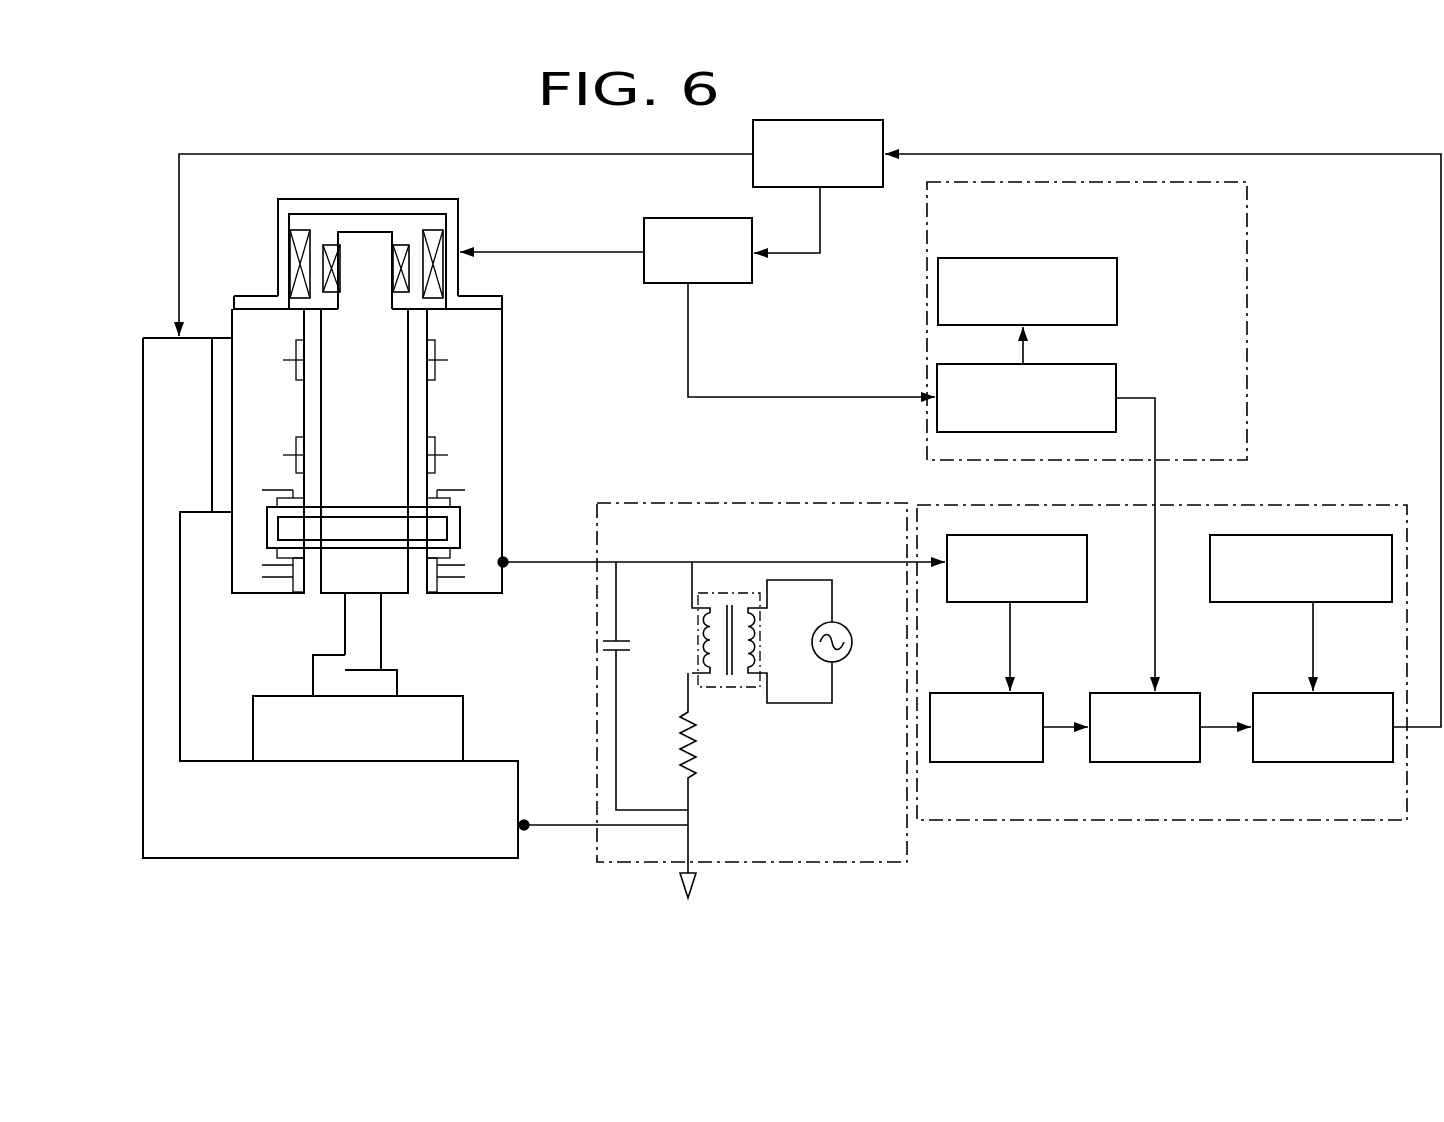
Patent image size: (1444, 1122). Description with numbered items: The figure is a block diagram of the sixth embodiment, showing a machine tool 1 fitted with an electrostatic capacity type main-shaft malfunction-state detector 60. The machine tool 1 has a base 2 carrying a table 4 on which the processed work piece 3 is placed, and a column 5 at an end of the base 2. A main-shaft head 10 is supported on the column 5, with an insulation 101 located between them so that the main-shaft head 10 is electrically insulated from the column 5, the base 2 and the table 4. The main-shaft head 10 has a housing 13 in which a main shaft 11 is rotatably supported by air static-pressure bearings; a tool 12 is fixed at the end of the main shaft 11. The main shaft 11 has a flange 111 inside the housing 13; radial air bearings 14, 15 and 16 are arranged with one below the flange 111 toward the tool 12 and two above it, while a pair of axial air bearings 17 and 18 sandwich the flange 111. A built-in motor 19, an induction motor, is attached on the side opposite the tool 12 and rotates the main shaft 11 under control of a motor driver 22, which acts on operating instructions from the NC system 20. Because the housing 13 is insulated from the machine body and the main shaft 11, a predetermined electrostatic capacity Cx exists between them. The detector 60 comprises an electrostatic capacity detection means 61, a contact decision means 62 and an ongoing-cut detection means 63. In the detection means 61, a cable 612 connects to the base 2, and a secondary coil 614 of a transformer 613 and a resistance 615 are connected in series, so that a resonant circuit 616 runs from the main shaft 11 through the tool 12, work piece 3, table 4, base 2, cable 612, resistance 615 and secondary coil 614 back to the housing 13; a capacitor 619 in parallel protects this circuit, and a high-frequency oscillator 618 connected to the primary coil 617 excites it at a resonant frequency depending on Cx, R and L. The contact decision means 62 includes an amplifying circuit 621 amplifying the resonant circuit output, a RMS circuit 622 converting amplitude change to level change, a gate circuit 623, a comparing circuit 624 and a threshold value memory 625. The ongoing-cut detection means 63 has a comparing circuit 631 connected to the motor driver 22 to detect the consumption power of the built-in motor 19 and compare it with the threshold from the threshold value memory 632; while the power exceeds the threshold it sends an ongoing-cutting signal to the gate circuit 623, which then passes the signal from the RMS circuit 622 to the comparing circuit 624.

The machine tool 1 is at (551, 858).
The base 2 is at (348, 843).
The work piece 3 is at (397, 682).
The table 4 is at (463, 727).
The column 5 is at (160, 337).
The insulation 101 is at (220, 337).
The main-shaft head 10 is at (514, 287).
The main shaft 11 is at (327, 595).
The tool 12 is at (343, 622).
The housing 13 is at (502, 334).
The air static-pressure bearing 14 is at (435, 587).
The air static-pressure bearing 15 is at (433, 448).
The air static-pressure bearing 16 is at (435, 370).
The air static-pressure bearing 17 is at (450, 553).
The air static-pressure bearing 18 is at (453, 502).
The built-in motor 19 is at (278, 243).
The flange 111 is at (447, 527).
The NC system 20 is at (838, 188).
The motor driver 22 is at (713, 283).
The main-shaft malfunction-state detector 60 is at (1046, 858).
The electrostatic capacity detection means 61 is at (795, 865).
The cable 612 is at (628, 830).
The transformer 613 is at (763, 633).
The secondary coil 614 is at (712, 680).
The resistance 615 is at (684, 765).
The resonant circuit 616 is at (643, 553).
The primary coil 617 is at (757, 682).
The high-frequency oscillator 618 is at (845, 622).
The capacitor 619 is at (621, 640).
The contact decision means 62 is at (1265, 822).
The amplifying circuit 621 is at (1048, 603).
The RMS circuit 622 is at (966, 693).
The gate circuit 623 is at (1117, 693).
The comparing circuit 624 is at (1358, 693).
The threshold value memory 625 is at (1243, 603).
The ongoing-cut detection means 63 is at (1247, 357).
The comparing circuit 631 is at (1116, 378).
The threshold value memory 632 is at (1117, 296).